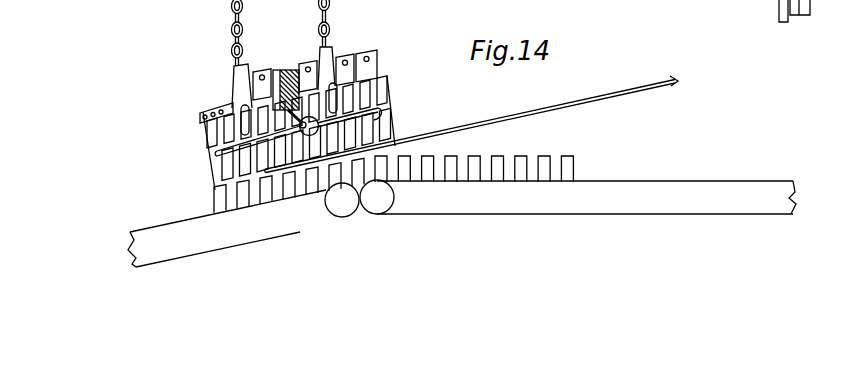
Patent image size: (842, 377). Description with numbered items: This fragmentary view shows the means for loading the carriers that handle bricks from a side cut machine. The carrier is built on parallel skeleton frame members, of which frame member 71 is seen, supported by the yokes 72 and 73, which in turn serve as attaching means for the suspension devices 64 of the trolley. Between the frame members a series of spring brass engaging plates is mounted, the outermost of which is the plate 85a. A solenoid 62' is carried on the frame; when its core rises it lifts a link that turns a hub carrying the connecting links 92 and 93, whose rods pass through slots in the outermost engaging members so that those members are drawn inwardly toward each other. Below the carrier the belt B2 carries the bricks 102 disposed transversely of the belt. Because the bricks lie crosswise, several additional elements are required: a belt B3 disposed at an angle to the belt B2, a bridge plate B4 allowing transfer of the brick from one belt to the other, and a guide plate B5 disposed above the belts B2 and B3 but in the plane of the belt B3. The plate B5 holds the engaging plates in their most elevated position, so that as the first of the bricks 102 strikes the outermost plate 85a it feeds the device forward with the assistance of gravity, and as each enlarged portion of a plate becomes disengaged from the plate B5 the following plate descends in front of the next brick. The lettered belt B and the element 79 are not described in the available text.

The conveyor belt B is at (107, 0).
The belt B2 is at (636, 185).
The belt B3 is at (300, 230).
The bridge plate B4 is at (382, 212).
The guide plate B5 is at (548, 104).
The suspension devices 64 is at (318, 25).
The yoke 72 is at (234, 82).
The yoke 73 is at (330, 62).
The solenoid 62' is at (281, 79).
The skeleton frame member 71 is at (203, 115).
The slat row 79 is at (269, 157).
The connecting link 92 is at (240, 156).
The connecting link 93 is at (374, 114).
The bricks 102 is at (214, 203).
The outermost plate 85a is at (212, 214).